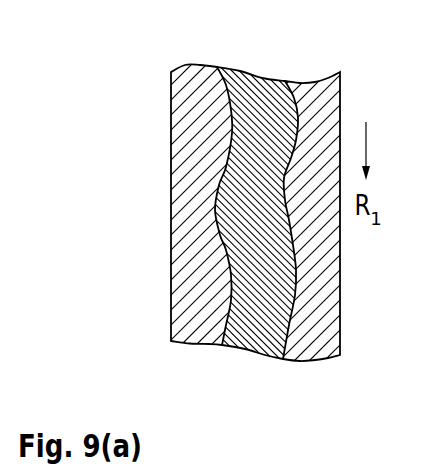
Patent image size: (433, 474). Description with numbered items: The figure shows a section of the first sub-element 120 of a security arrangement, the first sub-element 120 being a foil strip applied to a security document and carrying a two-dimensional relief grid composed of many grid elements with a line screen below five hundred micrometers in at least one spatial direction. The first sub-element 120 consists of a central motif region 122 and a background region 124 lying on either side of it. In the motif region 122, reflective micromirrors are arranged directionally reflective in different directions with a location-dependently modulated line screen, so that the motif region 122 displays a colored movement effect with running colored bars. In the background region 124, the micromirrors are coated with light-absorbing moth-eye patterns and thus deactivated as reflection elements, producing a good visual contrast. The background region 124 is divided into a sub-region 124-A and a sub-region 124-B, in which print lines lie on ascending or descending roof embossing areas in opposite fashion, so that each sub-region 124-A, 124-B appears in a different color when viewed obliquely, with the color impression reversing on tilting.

The first sub-element 120 is at (216, 237).
The motif region 122 is at (253, 78).
The background region 124 is at (216, 220).
The sub-region 124-A is at (198, 330).
The sub-region 124-B is at (312, 345).